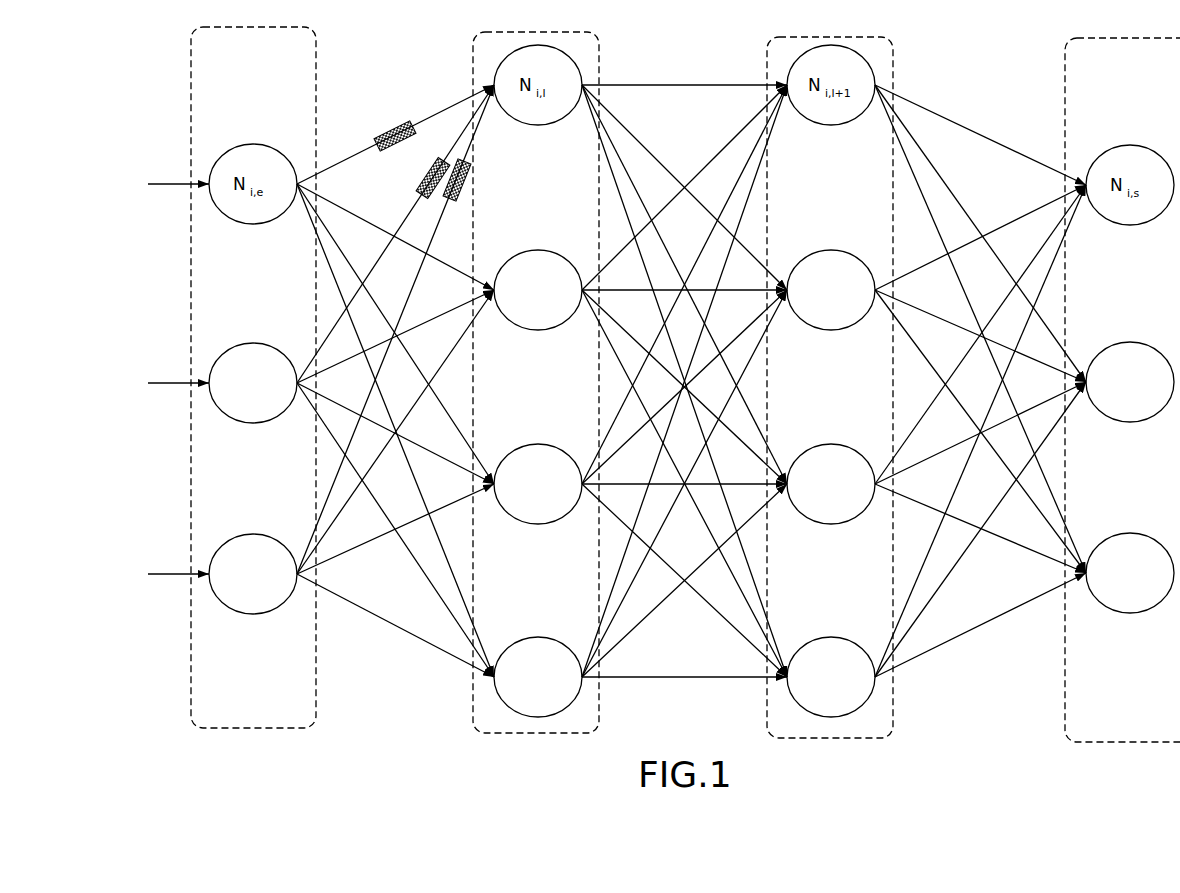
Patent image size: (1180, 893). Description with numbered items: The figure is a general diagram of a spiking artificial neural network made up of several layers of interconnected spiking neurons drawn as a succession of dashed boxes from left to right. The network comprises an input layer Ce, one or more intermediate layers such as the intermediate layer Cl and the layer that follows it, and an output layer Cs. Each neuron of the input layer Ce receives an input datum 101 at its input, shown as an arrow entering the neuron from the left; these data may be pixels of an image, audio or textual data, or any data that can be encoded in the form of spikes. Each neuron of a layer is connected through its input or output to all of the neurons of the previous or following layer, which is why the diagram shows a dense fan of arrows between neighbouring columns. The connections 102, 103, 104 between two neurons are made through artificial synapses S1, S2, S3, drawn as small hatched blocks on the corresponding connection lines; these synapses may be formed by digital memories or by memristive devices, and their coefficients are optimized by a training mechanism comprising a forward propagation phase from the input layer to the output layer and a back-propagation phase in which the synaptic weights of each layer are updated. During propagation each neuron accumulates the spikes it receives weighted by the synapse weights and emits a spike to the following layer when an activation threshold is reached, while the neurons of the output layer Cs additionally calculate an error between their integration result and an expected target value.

The input datum 101 is at (190, 183).
The connection 102 is at (372, 152).
The connection 103 is at (402, 223).
The connection 104 is at (403, 313).
The artificial synapse S1 is at (398, 121).
The artificial synapse S2 is at (440, 158).
The artificial synapse S3 is at (474, 179).
The input layer Ce is at (190, 72).
The intermediate layer Cl is at (472, 64).
The output layer Cs is at (1065, 82).